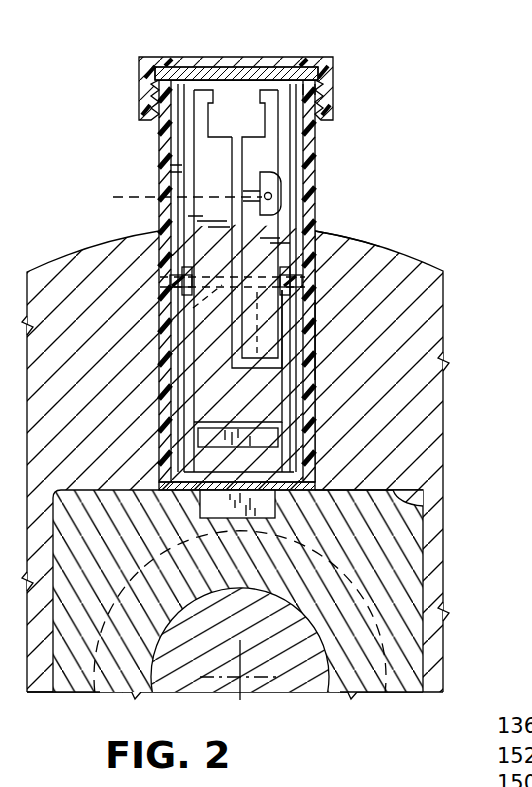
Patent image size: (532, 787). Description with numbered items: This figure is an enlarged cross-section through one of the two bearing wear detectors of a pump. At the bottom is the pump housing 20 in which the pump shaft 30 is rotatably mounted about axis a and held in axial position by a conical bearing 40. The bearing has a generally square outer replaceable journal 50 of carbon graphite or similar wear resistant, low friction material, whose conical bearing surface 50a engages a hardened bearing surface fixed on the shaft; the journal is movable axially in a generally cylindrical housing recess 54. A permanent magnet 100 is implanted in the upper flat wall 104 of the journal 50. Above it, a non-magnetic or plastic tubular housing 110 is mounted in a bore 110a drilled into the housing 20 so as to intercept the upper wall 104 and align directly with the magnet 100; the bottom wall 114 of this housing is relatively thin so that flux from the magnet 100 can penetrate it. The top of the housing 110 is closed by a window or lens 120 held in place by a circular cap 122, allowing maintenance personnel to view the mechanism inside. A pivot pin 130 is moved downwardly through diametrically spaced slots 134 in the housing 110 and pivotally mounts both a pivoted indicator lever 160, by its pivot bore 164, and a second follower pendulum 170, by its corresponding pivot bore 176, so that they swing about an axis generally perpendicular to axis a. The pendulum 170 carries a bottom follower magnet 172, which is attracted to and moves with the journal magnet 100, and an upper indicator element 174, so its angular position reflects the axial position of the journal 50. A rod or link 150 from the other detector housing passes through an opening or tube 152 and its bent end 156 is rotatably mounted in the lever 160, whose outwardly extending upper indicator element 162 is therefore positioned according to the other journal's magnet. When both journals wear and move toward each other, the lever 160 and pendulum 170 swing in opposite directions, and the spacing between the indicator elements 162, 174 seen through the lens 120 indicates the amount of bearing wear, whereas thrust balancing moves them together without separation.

The housing 20 is at (422, 253).
The pump shaft 30 is at (300, 693).
The conical bearing 40 is at (83, 703).
The outer replaceable journal 50 is at (422, 612).
The conical bearing surface 50a is at (368, 700).
The housing recess 54 is at (415, 493).
The permanent magnet 100 is at (265, 507).
The upper flat wall 104 is at (408, 484).
The tubular housing 110 is at (155, 130).
The bore 110a is at (320, 339).
The bottom wall 114 is at (346, 356).
The window or lens 120 is at (240, 72).
The circular cap 122 is at (333, 72).
The pivot pin 130 is at (335, 247).
The slots 134 is at (170, 180).
The rod or link 150 is at (271, 194).
The opening or tube 152 is at (274, 175).
The bent end 156 is at (164, 192).
The pivoted indicator lever 160 is at (283, 117).
The upper indicator element 162 is at (270, 88).
The pivot bore 164 is at (238, 279).
The second follower pendulum 170 is at (190, 386).
The bottom follower magnet 172 is at (212, 436).
The upper indicator element 174 is at (205, 88).
The pivot bore 176 is at (168, 320).
The axis a is at (245, 695).